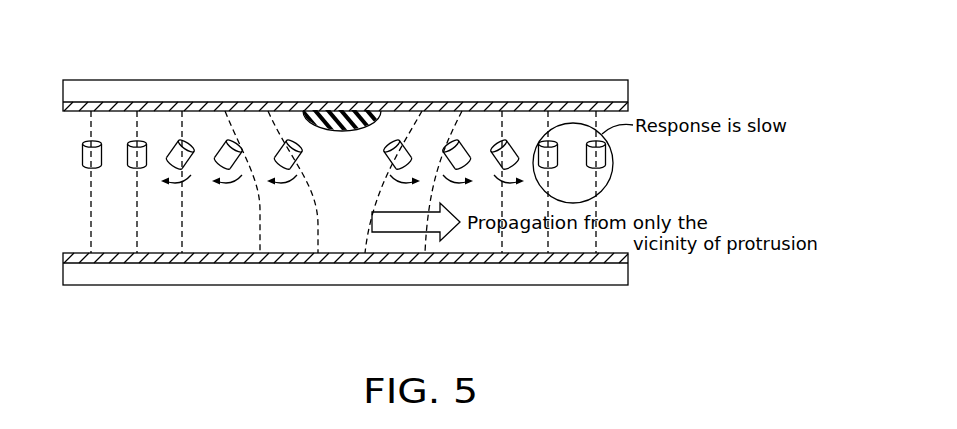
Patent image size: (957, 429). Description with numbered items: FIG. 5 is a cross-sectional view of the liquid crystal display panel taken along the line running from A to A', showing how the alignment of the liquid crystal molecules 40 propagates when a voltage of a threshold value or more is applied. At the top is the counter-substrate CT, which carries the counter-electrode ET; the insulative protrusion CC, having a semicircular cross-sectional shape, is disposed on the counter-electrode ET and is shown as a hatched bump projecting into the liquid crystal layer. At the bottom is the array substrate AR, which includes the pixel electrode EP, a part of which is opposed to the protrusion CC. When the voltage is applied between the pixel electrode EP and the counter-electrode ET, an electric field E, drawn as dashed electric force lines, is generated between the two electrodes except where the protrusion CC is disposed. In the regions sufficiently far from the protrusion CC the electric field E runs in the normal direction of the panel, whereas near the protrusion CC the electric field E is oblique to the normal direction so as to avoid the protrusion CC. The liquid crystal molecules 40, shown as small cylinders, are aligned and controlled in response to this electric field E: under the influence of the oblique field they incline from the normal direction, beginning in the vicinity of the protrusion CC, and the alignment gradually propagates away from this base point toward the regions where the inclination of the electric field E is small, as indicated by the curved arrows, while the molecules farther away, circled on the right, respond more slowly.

The liquid crystal molecules 40 is at (83, 152).
The counter-substrate CT is at (371, 72).
The protrusion CC is at (328, 110).
The counter-electrode ET is at (441, 108).
The electric field E is at (90, 203).
The pixel electrode EP is at (297, 259).
The array substrate AR is at (207, 294).
The line A-A' end A is at (52, 298).
The line A-A' end A' is at (642, 298).